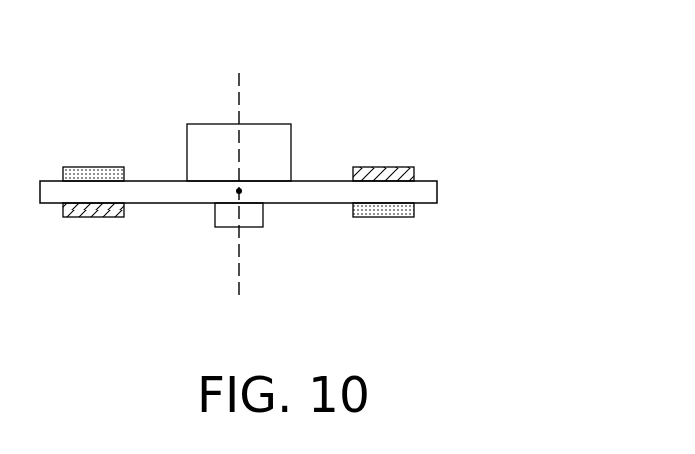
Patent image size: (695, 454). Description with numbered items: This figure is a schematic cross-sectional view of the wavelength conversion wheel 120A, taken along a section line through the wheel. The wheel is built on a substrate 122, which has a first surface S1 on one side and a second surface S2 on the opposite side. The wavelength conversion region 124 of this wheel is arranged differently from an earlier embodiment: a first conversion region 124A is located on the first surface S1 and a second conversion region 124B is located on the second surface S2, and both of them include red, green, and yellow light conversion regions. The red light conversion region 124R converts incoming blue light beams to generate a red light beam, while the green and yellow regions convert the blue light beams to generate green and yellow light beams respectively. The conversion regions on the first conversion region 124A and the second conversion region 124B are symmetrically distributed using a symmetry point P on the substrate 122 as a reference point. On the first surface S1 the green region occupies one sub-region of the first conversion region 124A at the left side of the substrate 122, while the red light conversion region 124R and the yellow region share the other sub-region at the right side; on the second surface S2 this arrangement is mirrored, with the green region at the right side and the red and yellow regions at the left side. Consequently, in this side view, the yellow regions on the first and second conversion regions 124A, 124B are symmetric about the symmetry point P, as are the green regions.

The wavelength conversion wheel 120A is at (305, 172).
The substrate 122 is at (430, 195).
The wavelength conversion region 124 is at (305, 149).
The first conversion region 124A is at (240, 135).
The second conversion region 124B is at (237, 250).
The red light conversion region 124R is at (556, 17).
The first surface S1 is at (172, 172).
The second surface S2 is at (178, 212).
The symmetry point P is at (241, 194).